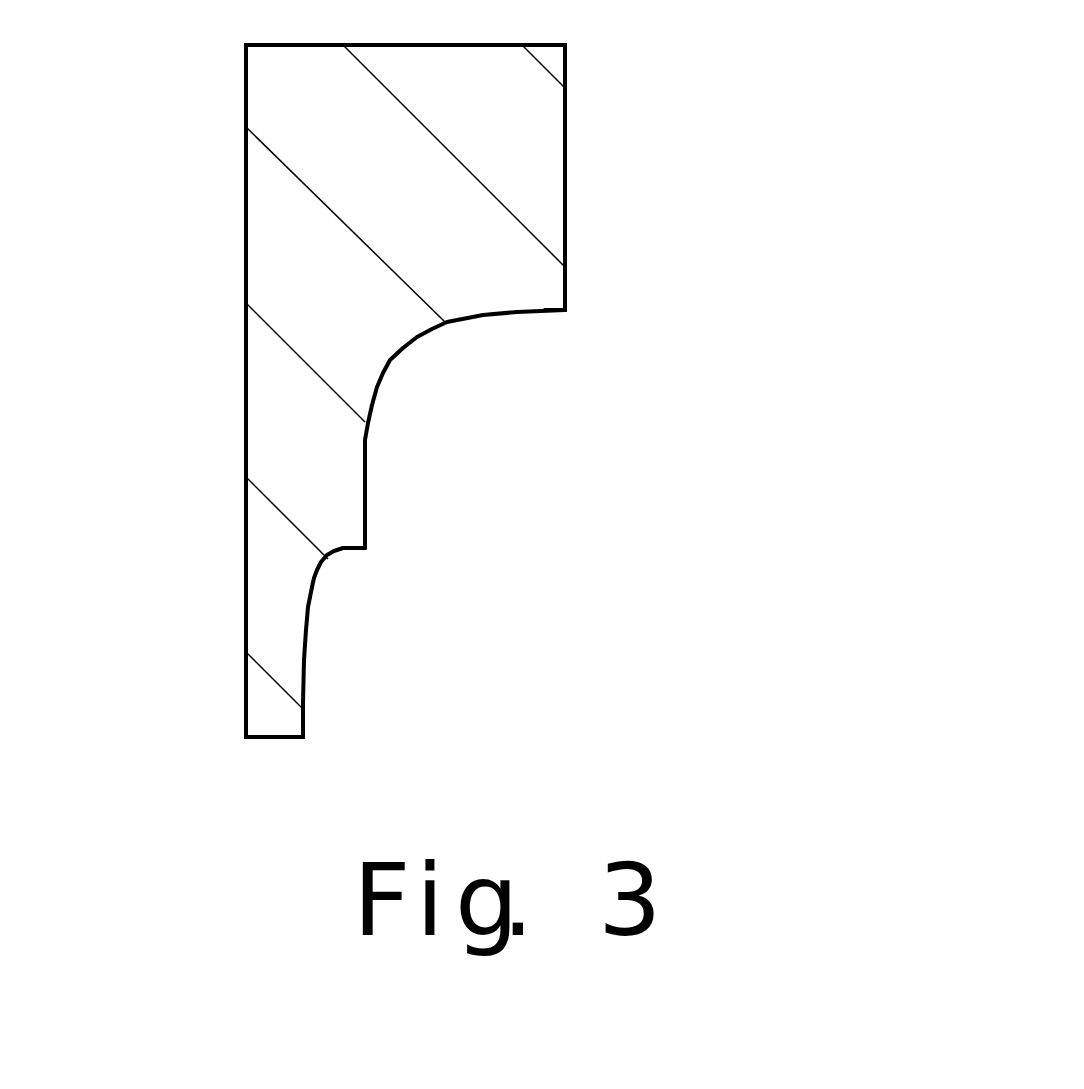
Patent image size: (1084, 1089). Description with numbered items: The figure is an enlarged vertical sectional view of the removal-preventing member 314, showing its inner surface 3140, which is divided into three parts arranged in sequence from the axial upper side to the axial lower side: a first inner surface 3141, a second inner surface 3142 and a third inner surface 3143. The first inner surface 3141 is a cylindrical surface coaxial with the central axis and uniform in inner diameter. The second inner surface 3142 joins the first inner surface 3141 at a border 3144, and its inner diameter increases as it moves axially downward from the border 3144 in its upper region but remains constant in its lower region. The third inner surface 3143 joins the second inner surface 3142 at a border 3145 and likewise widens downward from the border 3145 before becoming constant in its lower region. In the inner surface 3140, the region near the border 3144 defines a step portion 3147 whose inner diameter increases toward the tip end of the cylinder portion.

The removal-preventing member 314 is at (273, 269).
The inner surface 3140 is at (628, 520).
The first inner surface 3141 is at (567, 187).
The second inner surface 3142 is at (395, 367).
The third inner surface 3143 is at (315, 592).
The border 3144 is at (570, 310).
The border 3145 is at (367, 547).
The step portion 3147 is at (560, 332).